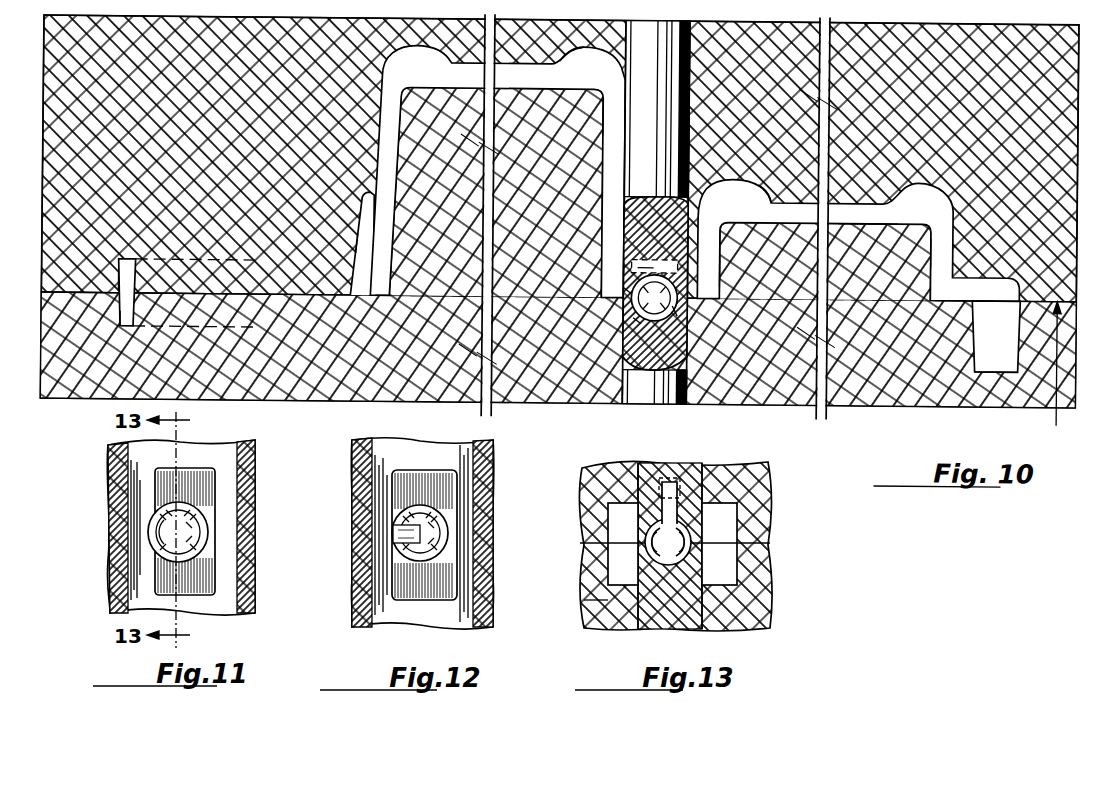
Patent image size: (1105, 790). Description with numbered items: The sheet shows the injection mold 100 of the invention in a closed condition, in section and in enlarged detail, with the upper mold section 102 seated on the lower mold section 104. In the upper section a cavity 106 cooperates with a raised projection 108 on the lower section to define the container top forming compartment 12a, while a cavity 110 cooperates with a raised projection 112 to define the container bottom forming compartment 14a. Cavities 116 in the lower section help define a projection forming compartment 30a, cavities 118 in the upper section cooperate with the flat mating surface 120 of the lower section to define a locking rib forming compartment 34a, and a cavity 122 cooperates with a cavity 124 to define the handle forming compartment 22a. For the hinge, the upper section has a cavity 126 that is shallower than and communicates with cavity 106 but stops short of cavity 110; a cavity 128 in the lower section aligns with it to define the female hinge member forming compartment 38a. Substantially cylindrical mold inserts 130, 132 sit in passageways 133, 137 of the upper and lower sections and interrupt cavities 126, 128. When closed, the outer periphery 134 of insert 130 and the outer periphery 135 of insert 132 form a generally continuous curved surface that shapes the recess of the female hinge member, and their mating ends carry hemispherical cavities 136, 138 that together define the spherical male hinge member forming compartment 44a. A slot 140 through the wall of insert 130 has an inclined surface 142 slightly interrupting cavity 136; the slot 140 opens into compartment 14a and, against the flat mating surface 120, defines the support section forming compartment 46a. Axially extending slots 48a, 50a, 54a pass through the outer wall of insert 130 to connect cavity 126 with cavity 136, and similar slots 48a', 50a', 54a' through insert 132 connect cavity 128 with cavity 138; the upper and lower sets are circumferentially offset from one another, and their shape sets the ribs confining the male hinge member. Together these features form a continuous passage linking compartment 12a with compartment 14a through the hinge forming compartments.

In FIG. 10, the mold 100 is at (1038, 433).
In FIG. 10, the upper mold section 102 is at (1006, 108).
In FIG. 12, the upper mold section 102 is at (494, 470).
In FIG. 13, the upper mold section 102 is at (756, 497).
In FIG. 10, the lower mold section 104 is at (953, 399).
In FIG. 11, the lower mold section 104 is at (248, 449).
In FIG. 13, the lower mold section 104 is at (762, 593).
In FIG. 10, the cavity 106 is at (780, 198).
In FIG. 12, the cavity 106 is at (478, 459).
In FIG. 10, the raised projection 108 is at (935, 226).
In FIG. 11, the raised projection 108 is at (250, 486).
In FIG. 10, the cavity 110 is at (548, 70).
In FIG. 12, the cavity 110 is at (360, 476).
In FIG. 10, the raised projection 112 is at (600, 98).
In FIG. 11, the raised projection 112 is at (113, 460).
In FIG. 10, the cavities 116 is at (1011, 364).
In FIG. 10, the cavities 118 is at (380, 211).
In FIG. 10, the flat mating surface 120 is at (386, 294).
In FIG. 10, the cavity 122 is at (130, 259).
In FIG. 10, the cavity 124 is at (122, 321).
In FIG. 10, the cavity 126 is at (710, 245).
In FIG. 12, the cavity 126 is at (438, 470).
In FIG. 13, the cavity 126 is at (609, 473).
In FIG. 10, the cavity 128 is at (706, 326).
In FIG. 11, the cavity 128 is at (196, 470).
In FIG. 13, the cavity 128 is at (604, 598).
In FIG. 10, the mold insert 130 is at (636, 46).
In FIG. 12, the mold insert 130 is at (400, 518).
In FIG. 13, the mold insert 130 is at (694, 478).
In FIG. 10, the mold insert 132 is at (643, 391).
In FIG. 11, the mold insert 132 is at (150, 530).
In FIG. 13, the mold insert 132 is at (690, 620).
In FIG. 10, the passageway 133 is at (692, 100).
In FIG. 10, the outer periphery 134 is at (716, 280).
In FIG. 12, the outer periphery 134 is at (426, 498).
In FIG. 10, the outer periphery 135 is at (672, 310).
In FIG. 11, the outer periphery 135 is at (204, 514).
In FIG. 10, the hemispherical cavity 136 is at (627, 256).
In FIG. 12, the hemispherical cavity 136 is at (430, 535).
In FIG. 10, the passageway 137 is at (679, 399).
In FIG. 10, the hemispherical cavity 138 is at (657, 366).
In FIG. 11, the hemispherical cavity 138 is at (192, 535).
In FIG. 10, the slot 140 is at (628, 262).
In FIG. 12, the slot 140 is at (396, 541).
In FIG. 10, the inclined surface 142 is at (632, 258).
In FIG. 13, the inclined surface 142 is at (668, 480).
In FIG. 10, the container top forming compartment 12a is at (862, 214).
In FIG. 10, the container bottom forming compartment 14a is at (480, 83).
In FIG. 10, the handle forming compartment 22a is at (121, 278).
In FIG. 10, the projection forming compartment 30a is at (983, 322).
In FIG. 10, the locking rib forming compartment 34a is at (356, 240).
In FIG. 10, the female hinge member forming compartment 38a is at (697, 284).
In FIG. 10, the spherical male hinge member forming compartment 44a is at (646, 262).
In FIG. 10, the support section forming compartment 46a is at (628, 263).
In FIG. 10, the axially extending slot 48a is at (596, 284).
In FIG. 13, the axially extending slot 48a is at (744, 531).
In FIG. 10, the axially extending slot 48a' is at (580, 319).
In FIG. 13, the axially extending slot 48a' is at (750, 549).
In FIG. 10, the axially extending slot 50a is at (716, 316).
In FIG. 10, the axially extending slot 50a' is at (598, 340).
In FIG. 13, the axially extending slot 54a is at (604, 532).
In FIG. 13, the axially extending slot 54a' is at (600, 558).